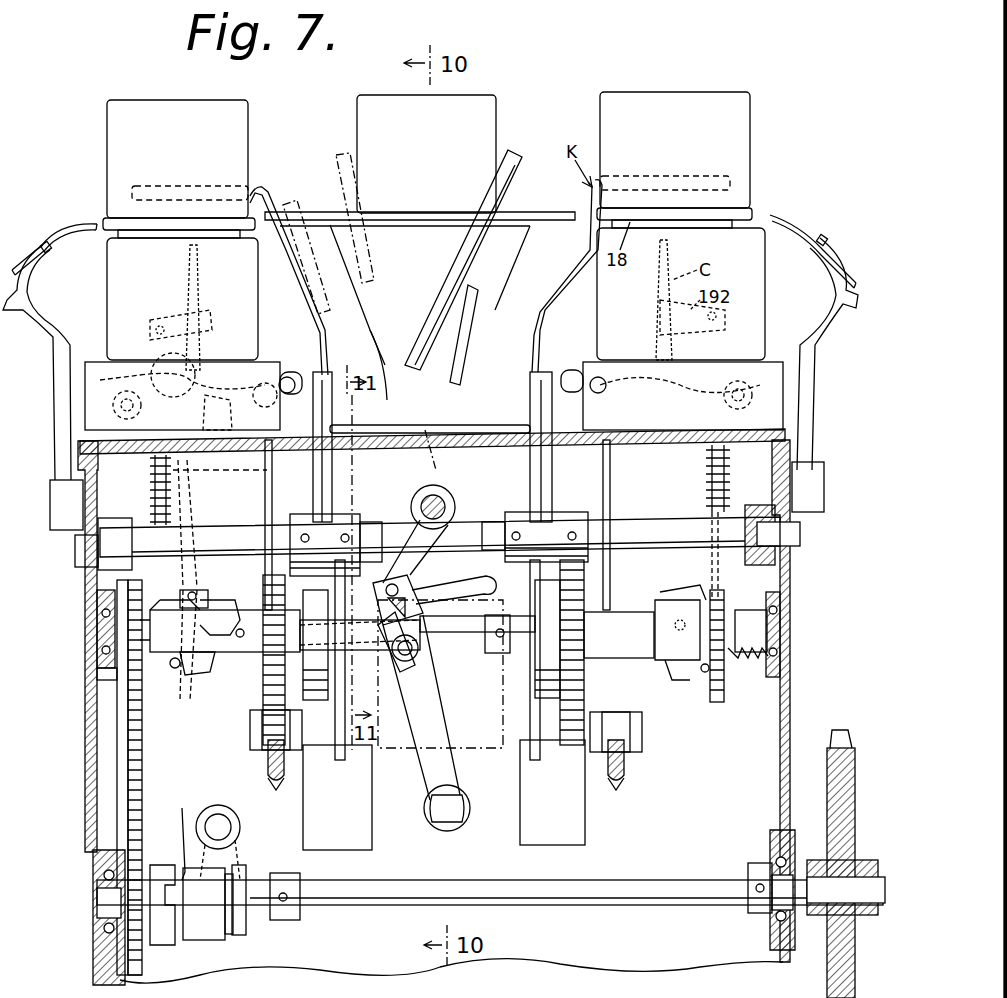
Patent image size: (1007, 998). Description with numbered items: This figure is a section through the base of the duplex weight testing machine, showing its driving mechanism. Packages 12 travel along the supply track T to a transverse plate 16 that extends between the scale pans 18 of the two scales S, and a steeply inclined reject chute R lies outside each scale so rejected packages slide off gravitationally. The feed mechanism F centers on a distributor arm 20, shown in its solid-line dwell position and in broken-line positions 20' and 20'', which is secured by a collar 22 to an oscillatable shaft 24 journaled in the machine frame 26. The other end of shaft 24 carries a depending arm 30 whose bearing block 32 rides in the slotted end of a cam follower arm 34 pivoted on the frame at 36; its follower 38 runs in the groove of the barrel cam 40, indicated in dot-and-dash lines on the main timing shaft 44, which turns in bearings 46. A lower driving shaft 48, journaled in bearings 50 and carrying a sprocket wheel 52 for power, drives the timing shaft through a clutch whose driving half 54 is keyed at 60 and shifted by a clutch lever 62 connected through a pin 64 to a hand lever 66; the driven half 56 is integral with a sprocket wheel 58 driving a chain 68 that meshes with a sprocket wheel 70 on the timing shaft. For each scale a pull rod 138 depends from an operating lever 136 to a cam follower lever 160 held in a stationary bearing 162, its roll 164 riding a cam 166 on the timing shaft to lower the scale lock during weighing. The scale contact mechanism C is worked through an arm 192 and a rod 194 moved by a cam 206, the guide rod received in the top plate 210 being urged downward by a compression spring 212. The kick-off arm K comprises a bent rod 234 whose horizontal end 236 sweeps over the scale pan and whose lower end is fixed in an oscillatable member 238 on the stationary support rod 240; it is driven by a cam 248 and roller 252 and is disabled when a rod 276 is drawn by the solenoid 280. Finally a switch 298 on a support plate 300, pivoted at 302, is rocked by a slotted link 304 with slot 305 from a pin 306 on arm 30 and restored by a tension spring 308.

The packages 12 is at (465, 105).
The transverse plate 16 is at (310, 224).
The scale pans 18 is at (158, 226).
The distributor arm 20 is at (466, 233).
The broken-line position of feed arm 20' is at (306, 244).
The dwell position of feed arm 20'' is at (343, 198).
The collar 22 is at (420, 459).
The transverse oscillatable shaft 24 is at (448, 497).
The machine frame 26 is at (790, 572).
The depending arm 30 is at (428, 552).
The oscillatable bearing block 32 is at (392, 580).
The cam follower arm 34 is at (430, 698).
The pivot 36 is at (450, 800).
The revoluble cam follower 38 is at (420, 650).
The cylindrical cam 40 is at (392, 748).
The main timing shaft 44 is at (698, 662).
The bearings 46 is at (97, 635).
The driving shaft 48 is at (338, 904).
The bearings 50 is at (93, 890).
The sprocket wheel 52 is at (846, 732).
The driving half of clutch 54 is at (200, 930).
The driven half of clutch 56 is at (158, 865).
The sprocket wheel 58 is at (145, 960).
The key 60 is at (187, 833).
The clutch lever 62 is at (240, 852).
The pin 64 is at (224, 826).
The control lever 66 is at (100, 380).
The chain 68 is at (128, 752).
The sprocket wheel 70 is at (140, 610).
The operating and motion limiting lever 136 is at (290, 370).
The pull rod 138 is at (288, 486).
The cam follower lever 160 is at (270, 778).
The stationary bearing 162 is at (290, 720).
The cam follower roll 164 is at (286, 760).
The cam 166 is at (263, 697).
The arm 192 is at (166, 322).
The rod 194 is at (172, 482).
The cam 206 is at (735, 660).
The top plate of machine frame 210 is at (200, 430).
The compression spring 212 is at (150, 482).
The bent rod 234 is at (335, 330).
The horizontal end of bent rod 236 is at (186, 186).
The oscillatable member 238 is at (345, 440).
The stationary support rod 240 is at (224, 528).
The operating cam 248 is at (310, 672).
The cam roller 252 is at (292, 514).
The rod 276 is at (345, 690).
The solenoid 280 is at (340, 840).
The switch 298 is at (218, 610).
The support plate 300 is at (195, 675).
The pivot 302 is at (194, 592).
The link 304 is at (368, 522).
The slot 305 is at (440, 598).
The pin 306 is at (404, 649).
The tension spring 308 is at (100, 690).
The scale contact mechanism C is at (200, 290).
The feed or distributor mechanism F is at (452, 362).
The discharge or kick-off arm K is at (272, 186).
The reject chute R is at (50, 252).
The weight testing scales S is at (92, 195).
The supply track T is at (534, 178).